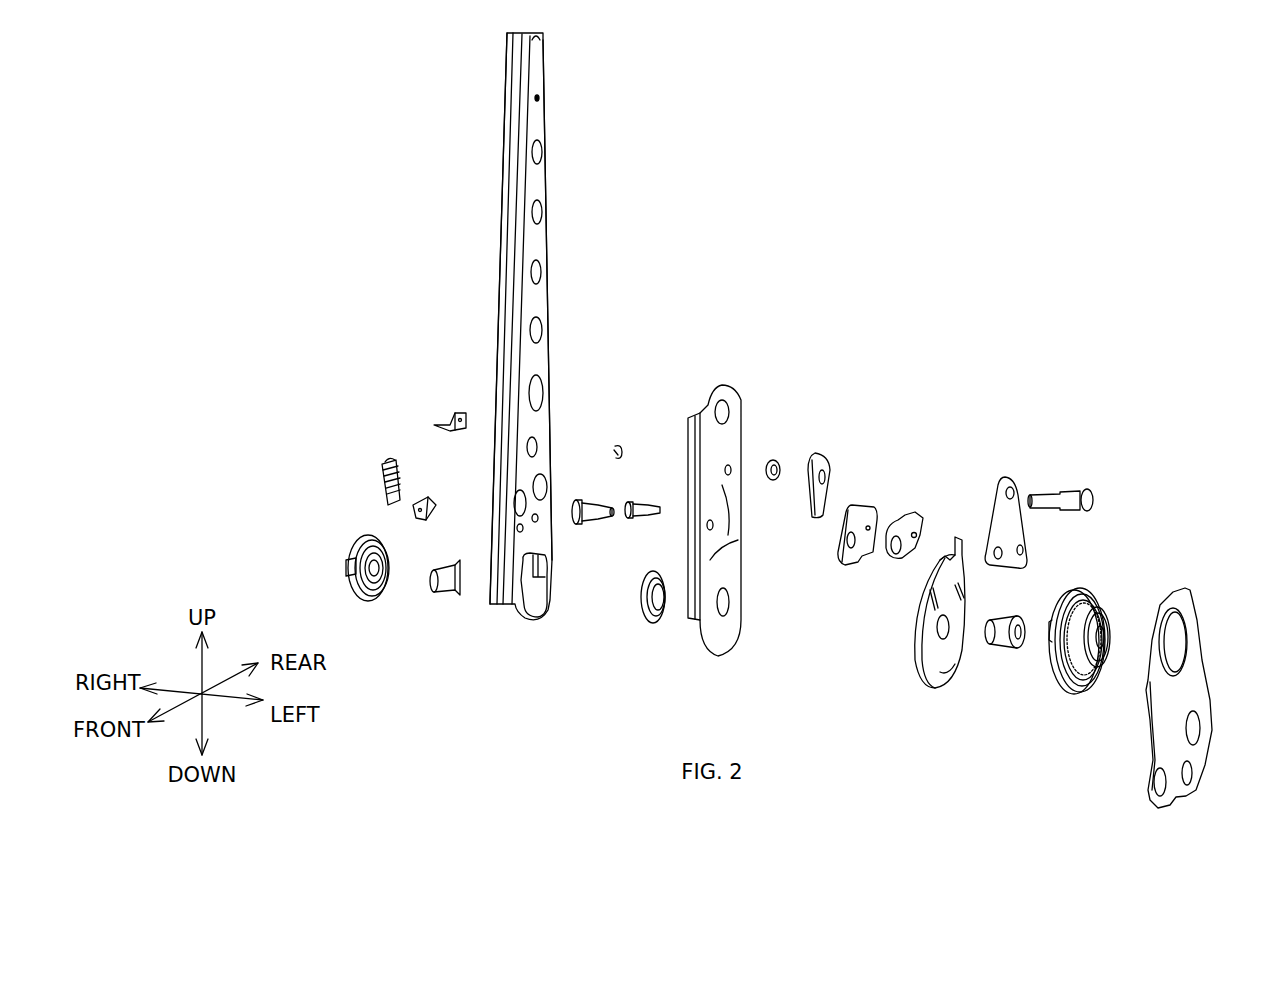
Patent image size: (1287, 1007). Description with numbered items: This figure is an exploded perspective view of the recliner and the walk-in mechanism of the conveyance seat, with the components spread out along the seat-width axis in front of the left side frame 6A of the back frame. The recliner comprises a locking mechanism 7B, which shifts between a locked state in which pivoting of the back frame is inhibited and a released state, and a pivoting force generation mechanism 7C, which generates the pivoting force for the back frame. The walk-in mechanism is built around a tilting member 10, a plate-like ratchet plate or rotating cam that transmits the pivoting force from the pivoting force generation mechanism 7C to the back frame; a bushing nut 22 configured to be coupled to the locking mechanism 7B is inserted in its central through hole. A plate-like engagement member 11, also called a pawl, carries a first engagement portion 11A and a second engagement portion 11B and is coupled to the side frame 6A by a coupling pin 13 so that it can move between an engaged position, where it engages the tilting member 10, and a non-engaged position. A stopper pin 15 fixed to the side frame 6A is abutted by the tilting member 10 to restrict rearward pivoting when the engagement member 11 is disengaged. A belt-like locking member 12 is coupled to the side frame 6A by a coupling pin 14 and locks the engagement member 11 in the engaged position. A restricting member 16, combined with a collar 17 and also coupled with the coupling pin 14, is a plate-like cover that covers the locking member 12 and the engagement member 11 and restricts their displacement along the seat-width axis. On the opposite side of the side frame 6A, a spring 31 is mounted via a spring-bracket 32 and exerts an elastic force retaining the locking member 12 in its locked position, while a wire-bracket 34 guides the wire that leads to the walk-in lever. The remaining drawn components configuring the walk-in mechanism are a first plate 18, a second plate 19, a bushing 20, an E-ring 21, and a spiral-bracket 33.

The left side frame 6A is at (540, 180).
The wire-bracket 34 is at (455, 412).
The spring 31 is at (383, 483).
The spring-bracket 32 is at (430, 500).
The pivoting force generation mechanism 7C is at (352, 560).
The spiral-bracket 33 is at (445, 595).
The E-ring 21 is at (620, 447).
The coupling pin 13 is at (590, 522).
The stopper pin 15 is at (640, 507).
The bushing 20 is at (642, 607).
The first plate 18 is at (735, 430).
The collar 17 is at (775, 461).
The locking member 12 is at (825, 462).
The second engagement portion 11B is at (862, 510).
The first engagement portion 11A is at (905, 520).
The engagement member 11 is at (876, 578).
The restricting member 16 is at (1003, 505).
The coupling pin 14 is at (1093, 500).
The tilting member 10 is at (935, 672).
The bushing nut 22 is at (997, 640).
The locking mechanism 7B is at (1093, 580).
The second plate 19 is at (1200, 668).